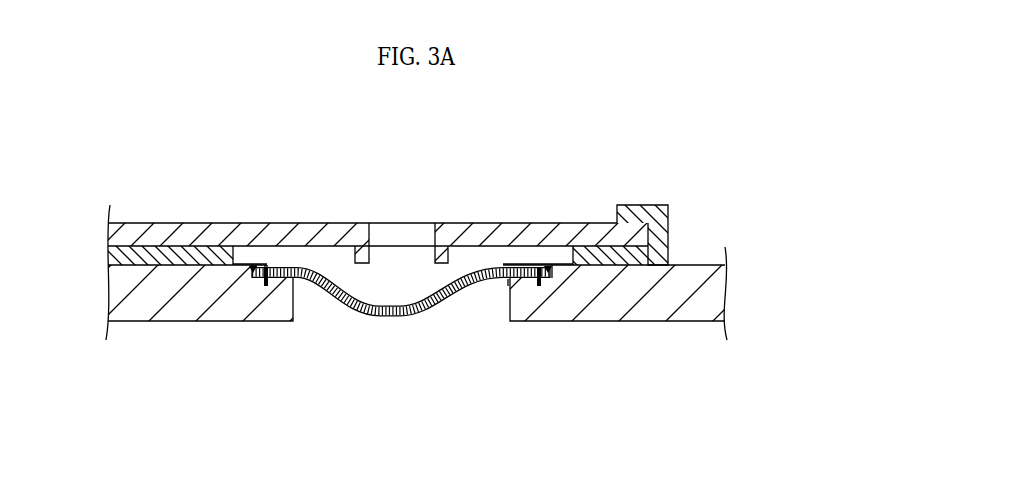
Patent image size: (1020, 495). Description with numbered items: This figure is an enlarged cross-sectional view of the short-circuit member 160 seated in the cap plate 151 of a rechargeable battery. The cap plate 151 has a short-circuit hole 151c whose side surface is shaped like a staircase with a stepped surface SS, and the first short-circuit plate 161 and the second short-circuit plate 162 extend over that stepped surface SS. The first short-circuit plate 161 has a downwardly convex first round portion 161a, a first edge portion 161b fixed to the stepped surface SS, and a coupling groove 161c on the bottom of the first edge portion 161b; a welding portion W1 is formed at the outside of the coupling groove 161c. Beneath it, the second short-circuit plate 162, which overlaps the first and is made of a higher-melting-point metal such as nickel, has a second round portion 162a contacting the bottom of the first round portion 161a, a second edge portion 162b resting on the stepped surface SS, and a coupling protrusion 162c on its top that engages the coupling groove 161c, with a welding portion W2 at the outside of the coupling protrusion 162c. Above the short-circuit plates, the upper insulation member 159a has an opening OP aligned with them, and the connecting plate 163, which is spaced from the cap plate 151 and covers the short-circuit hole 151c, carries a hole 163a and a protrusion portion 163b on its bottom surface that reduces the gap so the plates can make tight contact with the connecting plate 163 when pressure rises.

The cap plate 151 is at (143, 312).
The short-circuit hole 151c is at (474, 268).
The upper insulation member 159a is at (178, 257).
The short-circuit member 160 is at (638, 162).
The first short-circuit plate 161 is at (379, 359).
The first round portion 161a is at (340, 293).
The first edge portion 161b is at (254, 273).
The coupling groove 161c is at (266, 286).
The second short-circuit plate 162 is at (512, 364).
The second round portion 162a is at (433, 313).
The second edge portion 162b is at (508, 279).
The coupling protrusion 162c is at (581, 339).
The connecting plate 163 is at (540, 236).
The hole 163a is at (407, 236).
The protrusion portion 163b is at (355, 260).
The opening OP is at (558, 250).
The stepped surface SS is at (552, 276).
The welding portion W1 is at (252, 266).
The welding portion W2 is at (268, 266).